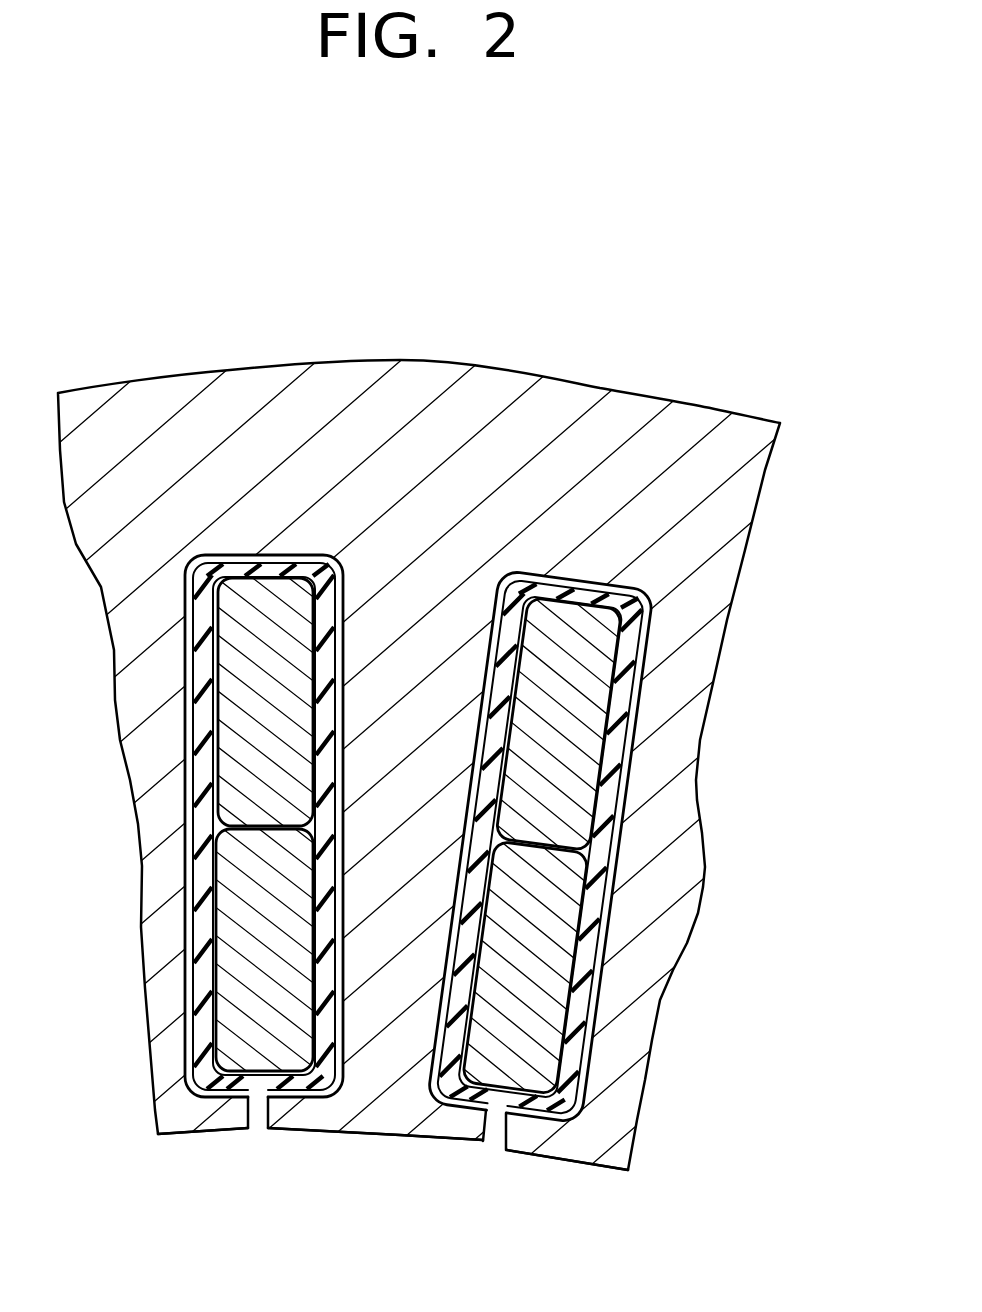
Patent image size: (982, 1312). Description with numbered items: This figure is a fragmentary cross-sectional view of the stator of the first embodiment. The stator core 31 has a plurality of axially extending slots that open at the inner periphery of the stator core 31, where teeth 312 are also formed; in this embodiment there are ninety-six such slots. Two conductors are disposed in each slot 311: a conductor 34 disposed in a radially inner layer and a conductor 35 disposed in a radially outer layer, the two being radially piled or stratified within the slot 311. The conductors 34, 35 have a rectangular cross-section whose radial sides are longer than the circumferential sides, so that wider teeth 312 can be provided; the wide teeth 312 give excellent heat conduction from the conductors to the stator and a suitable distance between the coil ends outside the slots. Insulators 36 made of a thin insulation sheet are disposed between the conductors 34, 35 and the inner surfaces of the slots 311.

The stator core 31 is at (620, 423).
The slot 311 is at (528, 567).
The teeth 312 is at (600, 1125).
The conductor 34 is at (542, 983).
The conductor 35 is at (577, 767).
The insulator 36 is at (625, 673).